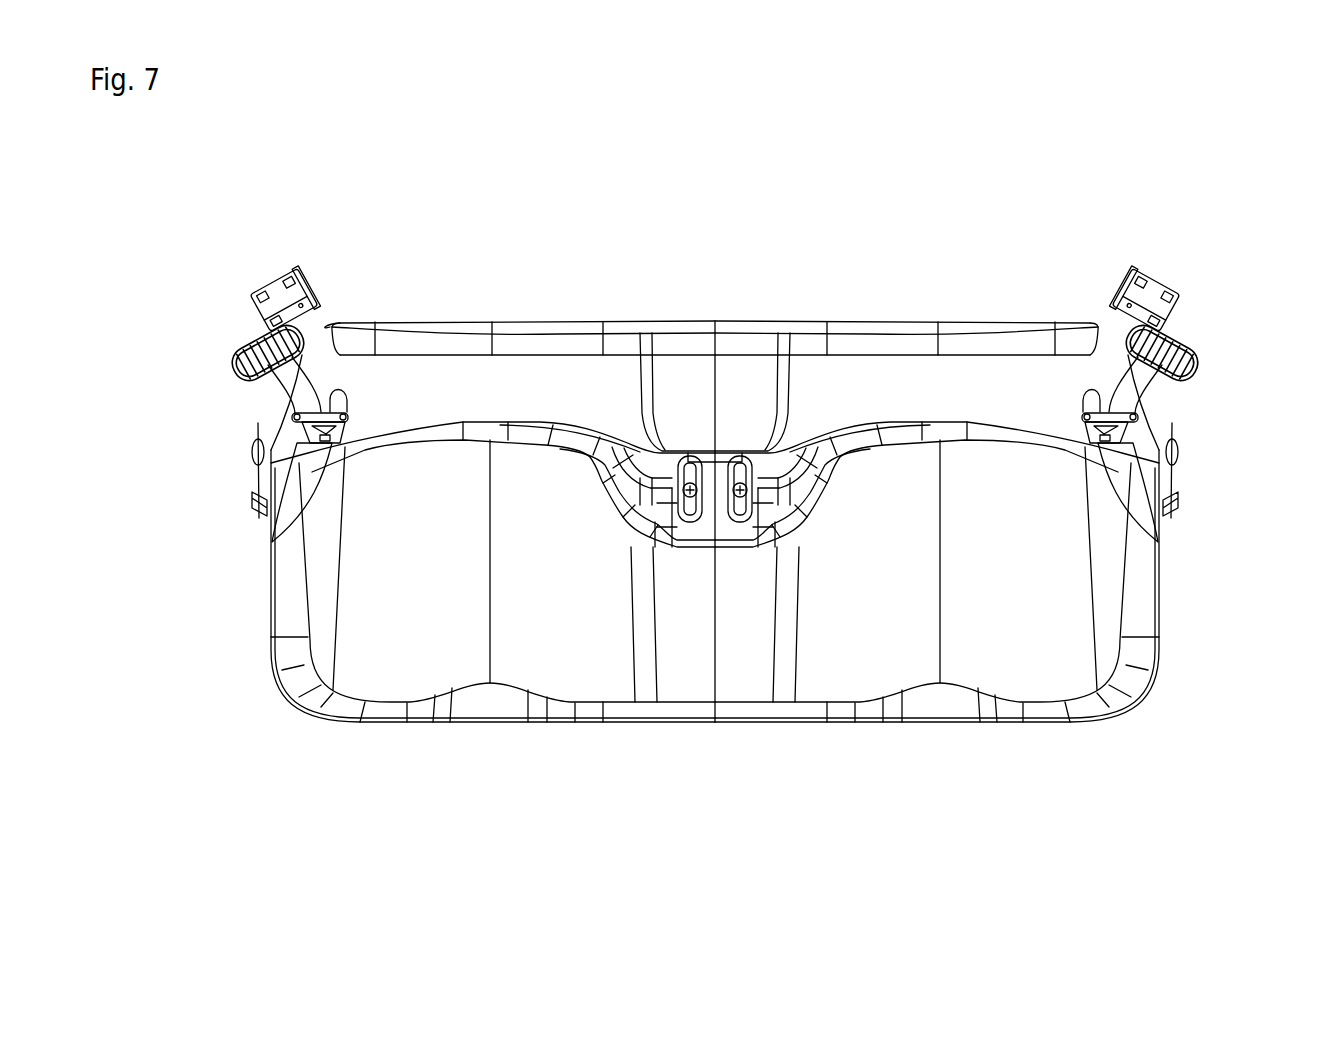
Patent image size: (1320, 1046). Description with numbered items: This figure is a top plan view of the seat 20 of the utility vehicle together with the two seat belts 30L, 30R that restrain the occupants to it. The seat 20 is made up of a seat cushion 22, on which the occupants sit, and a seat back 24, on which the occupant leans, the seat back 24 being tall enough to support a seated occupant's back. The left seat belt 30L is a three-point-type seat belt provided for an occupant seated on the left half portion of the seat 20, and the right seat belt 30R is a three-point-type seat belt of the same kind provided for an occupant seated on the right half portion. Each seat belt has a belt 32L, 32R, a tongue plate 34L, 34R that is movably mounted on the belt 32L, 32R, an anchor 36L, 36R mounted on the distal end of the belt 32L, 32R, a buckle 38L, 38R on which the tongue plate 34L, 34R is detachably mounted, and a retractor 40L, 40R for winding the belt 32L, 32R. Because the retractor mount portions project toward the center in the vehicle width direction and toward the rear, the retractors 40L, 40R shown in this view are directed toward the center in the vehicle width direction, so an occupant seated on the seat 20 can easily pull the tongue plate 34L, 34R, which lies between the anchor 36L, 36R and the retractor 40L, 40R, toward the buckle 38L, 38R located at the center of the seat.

The seat 20 is at (814, 778).
The seat cushion 22 is at (884, 641).
The seat back 24 is at (690, 332).
The right seat belt 30R is at (187, 507).
The left seat belt 30L is at (1243, 510).
The belt 32R is at (265, 530).
The belt 32L is at (1163, 535).
The tongue plate 34R is at (347, 437).
The tongue plate 34L is at (1086, 438).
The anchor 36R is at (256, 430).
The anchor 36L is at (1174, 434).
The buckle 38R is at (640, 522).
The buckle 38L is at (795, 522).
The retractor 40R is at (276, 292).
The retractor 40L is at (1153, 294).